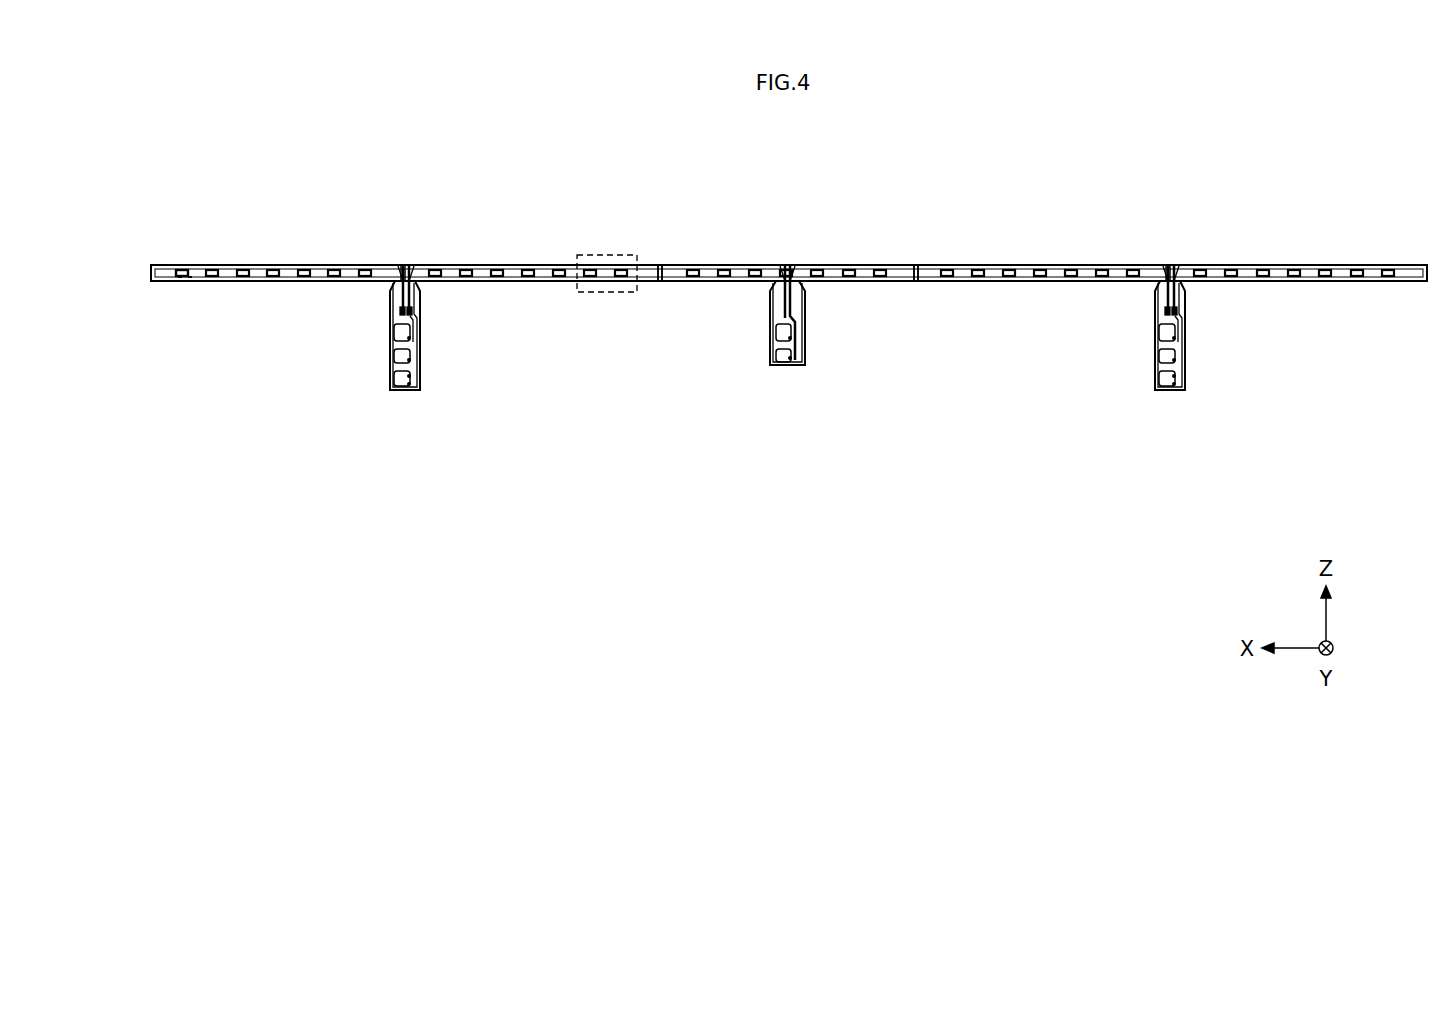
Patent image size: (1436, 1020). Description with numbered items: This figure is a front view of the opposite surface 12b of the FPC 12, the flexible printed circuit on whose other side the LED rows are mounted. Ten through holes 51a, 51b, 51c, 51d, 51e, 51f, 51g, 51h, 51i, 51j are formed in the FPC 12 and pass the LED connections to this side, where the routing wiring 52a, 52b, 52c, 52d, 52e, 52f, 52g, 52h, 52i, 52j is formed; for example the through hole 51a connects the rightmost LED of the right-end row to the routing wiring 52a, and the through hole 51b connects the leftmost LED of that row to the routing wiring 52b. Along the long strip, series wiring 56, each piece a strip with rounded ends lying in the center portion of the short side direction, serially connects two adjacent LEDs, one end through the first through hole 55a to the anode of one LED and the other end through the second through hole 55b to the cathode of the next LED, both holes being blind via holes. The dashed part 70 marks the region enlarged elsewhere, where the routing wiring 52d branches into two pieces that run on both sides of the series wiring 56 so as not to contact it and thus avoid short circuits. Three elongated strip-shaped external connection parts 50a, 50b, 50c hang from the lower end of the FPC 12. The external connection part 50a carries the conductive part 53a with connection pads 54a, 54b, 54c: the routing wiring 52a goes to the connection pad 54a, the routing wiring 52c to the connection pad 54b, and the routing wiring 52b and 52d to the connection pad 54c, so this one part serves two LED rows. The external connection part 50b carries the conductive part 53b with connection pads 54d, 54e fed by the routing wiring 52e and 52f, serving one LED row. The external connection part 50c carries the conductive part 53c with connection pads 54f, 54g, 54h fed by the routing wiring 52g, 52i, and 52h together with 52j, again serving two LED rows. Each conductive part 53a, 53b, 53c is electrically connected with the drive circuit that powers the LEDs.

The FPC 12 is at (885, 182).
The opposite surface 12b is at (165, 282).
The through hole 51a is at (158, 268).
The through hole 51b is at (398, 268).
The through hole 51c is at (410, 268).
The through hole 51d is at (655, 268).
The through hole 51e is at (665, 268).
The through hole 51f is at (912, 268).
The through hole 51g is at (920, 268).
The through hole 51h is at (1163, 268).
The through hole 51i is at (1175, 268).
The through hole 51j is at (1420, 268).
The routing wiring 52a is at (258, 268).
The routing wiring 52b is at (401, 298).
The routing wiring 52c is at (416, 320).
The routing wiring 52d is at (411, 298).
The routing wiring 52e is at (706, 268).
The routing wiring 52f is at (862, 268).
The routing wiring 52g is at (1000, 268).
The routing wiring 52h is at (1127, 290).
The routing wiring 52i is at (1214, 329).
The routing wiring 52j is at (1213, 290).
The external connection part 50a is at (420, 368).
The external connection part 50b is at (805, 360).
The external connection part 50c is at (1206, 335).
The conductive part 53a is at (402, 403).
The conductive part 53b is at (786, 378).
The conductive part 53c is at (1170, 427).
The connection pad 54a is at (395, 333).
The connection pad 54b is at (395, 355).
The connection pad 54c is at (395, 380).
The connection pad 54d is at (777, 333).
The connection pad 54e is at (777, 355).
The connection pad 54f is at (1131, 333).
The connection pad 54g is at (1130, 357).
The connection pad 54h is at (1130, 383).
The through hole 55a is at (181, 282).
The through hole 55b is at (190, 282).
The series wiring 56 is at (182, 268).
The part 70 is at (607, 292).